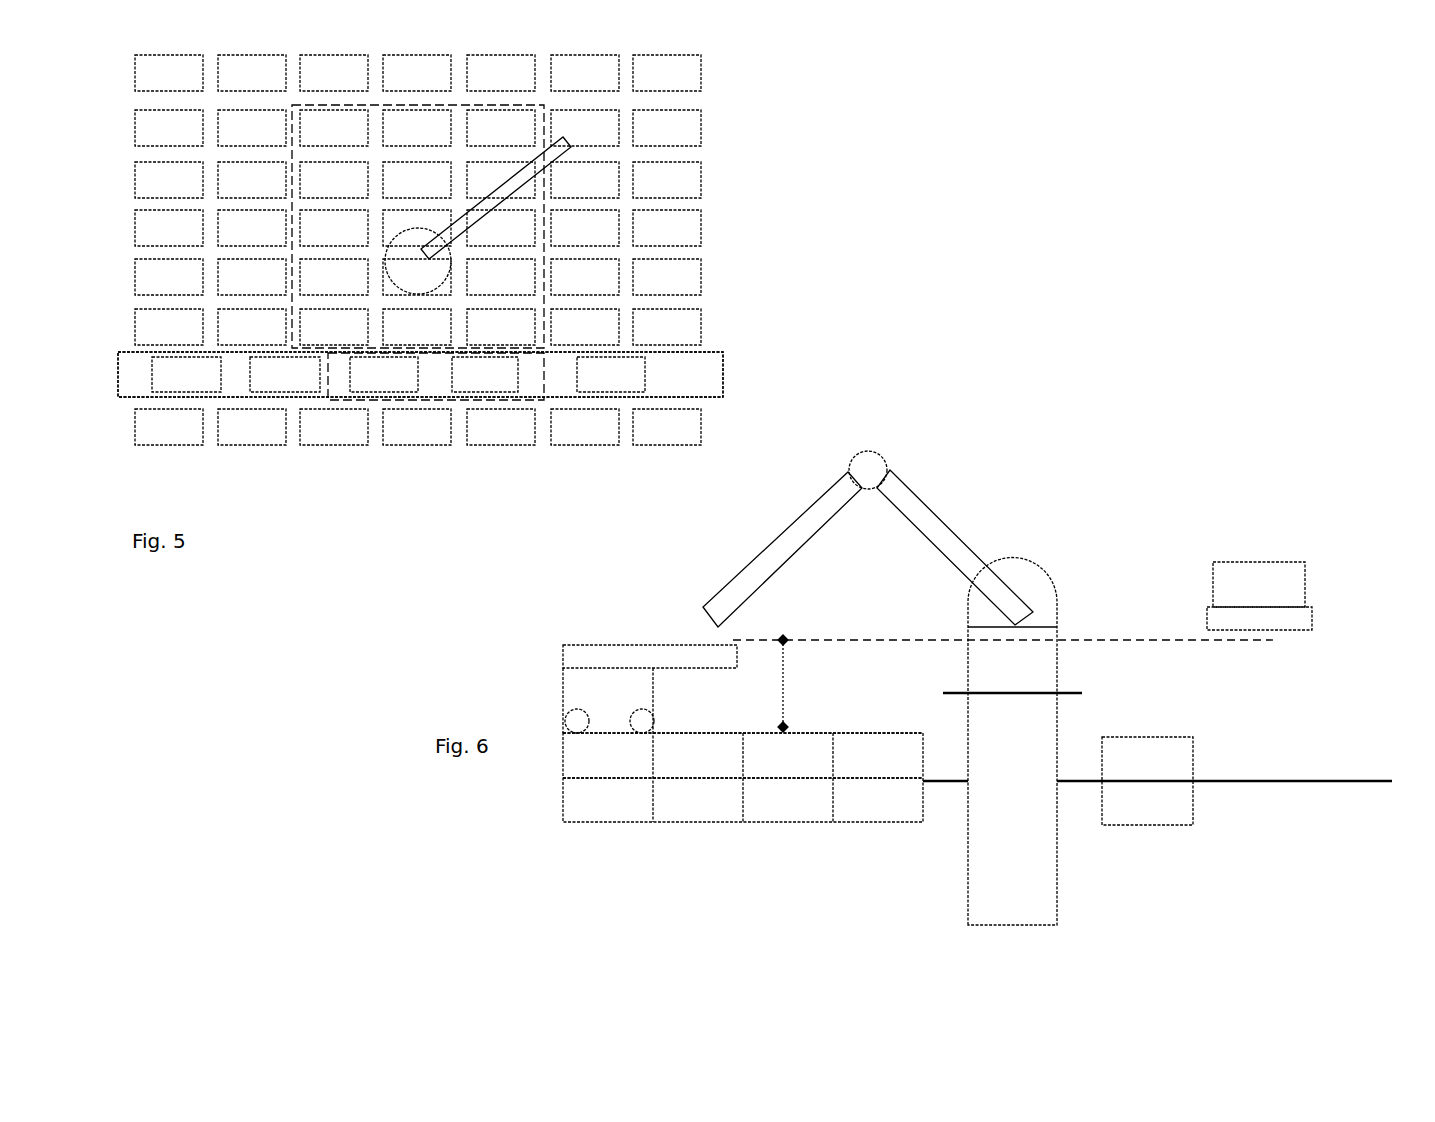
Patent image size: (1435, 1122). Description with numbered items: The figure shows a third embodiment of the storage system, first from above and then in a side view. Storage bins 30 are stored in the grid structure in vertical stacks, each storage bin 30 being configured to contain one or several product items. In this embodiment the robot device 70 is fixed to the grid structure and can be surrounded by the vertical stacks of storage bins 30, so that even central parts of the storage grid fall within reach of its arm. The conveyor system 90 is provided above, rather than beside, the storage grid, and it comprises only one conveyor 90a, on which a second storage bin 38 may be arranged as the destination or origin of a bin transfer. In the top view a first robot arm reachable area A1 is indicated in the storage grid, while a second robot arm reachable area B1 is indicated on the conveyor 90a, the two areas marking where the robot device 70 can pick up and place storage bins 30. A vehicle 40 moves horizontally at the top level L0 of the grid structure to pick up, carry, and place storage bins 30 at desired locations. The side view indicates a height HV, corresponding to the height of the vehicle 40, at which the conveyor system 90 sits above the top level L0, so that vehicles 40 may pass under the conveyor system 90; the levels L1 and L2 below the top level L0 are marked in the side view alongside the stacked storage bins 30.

In FIG. 5, the storage bin 30 is at (523, 230).
In FIG. 6, the storage bin 30 is at (875, 747).
In FIG. 5, the second storage bin 38 is at (502, 377).
In FIG. 6, the second storage bin 38 is at (1282, 583).
In FIG. 6, the vehicle 40 is at (597, 677).
In FIG. 5, the robot device 70 is at (394, 232).
In FIG. 6, the robot device 70 is at (1095, 543).
In FIG. 5, the conveyor system 90 is at (738, 381).
In FIG. 6, the conveyor system 90 is at (1328, 638).
In FIG. 5, the conveyor 90a is at (122, 370).
In FIG. 6, the conveyor 90a is at (1273, 618).
In FIG. 5, the first robot arm reachable area A1 is at (532, 103).
In FIG. 5, the second robot arm reachable area B1 is at (545, 402).
In FIG. 6, the height HV is at (757, 683).
In FIG. 6, the top level L0 is at (588, 715).
In FIG. 6, the level 1 L1 is at (722, 747).
In FIG. 6, the level 2 L2 is at (722, 794).